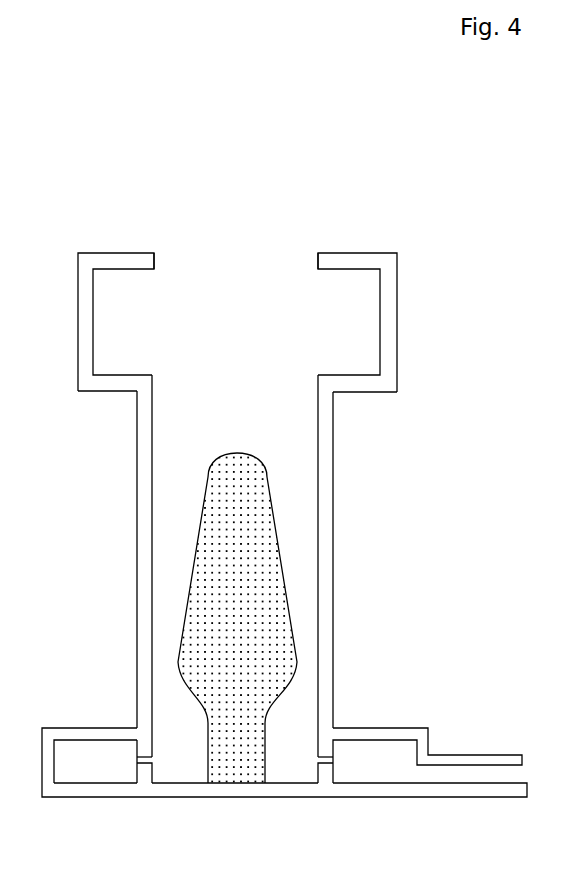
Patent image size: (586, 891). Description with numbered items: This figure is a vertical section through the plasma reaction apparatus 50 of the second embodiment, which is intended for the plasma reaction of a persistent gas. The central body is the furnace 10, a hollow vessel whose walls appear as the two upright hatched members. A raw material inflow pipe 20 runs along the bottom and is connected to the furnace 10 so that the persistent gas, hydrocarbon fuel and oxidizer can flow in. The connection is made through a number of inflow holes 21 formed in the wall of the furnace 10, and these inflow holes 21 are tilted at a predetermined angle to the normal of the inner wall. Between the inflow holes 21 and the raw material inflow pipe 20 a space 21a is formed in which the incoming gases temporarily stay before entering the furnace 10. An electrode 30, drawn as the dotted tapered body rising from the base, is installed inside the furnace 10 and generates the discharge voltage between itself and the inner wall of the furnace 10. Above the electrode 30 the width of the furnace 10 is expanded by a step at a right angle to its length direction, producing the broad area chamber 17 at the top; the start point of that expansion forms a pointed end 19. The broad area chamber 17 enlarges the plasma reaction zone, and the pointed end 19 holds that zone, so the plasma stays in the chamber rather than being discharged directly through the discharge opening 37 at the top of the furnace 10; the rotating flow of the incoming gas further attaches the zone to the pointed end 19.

The plasma reaction apparatus 50 is at (270, 470).
The furnace 10 is at (143, 530).
The broad area chamber 17 is at (63, 253).
The discharge opening 37 is at (237, 262).
The pointed end 19 is at (153, 376).
The raw material inflow pipe 20 is at (493, 805).
The inflow holes 21 is at (328, 762).
The space 21a is at (87, 767).
The electrode 30 is at (282, 635).